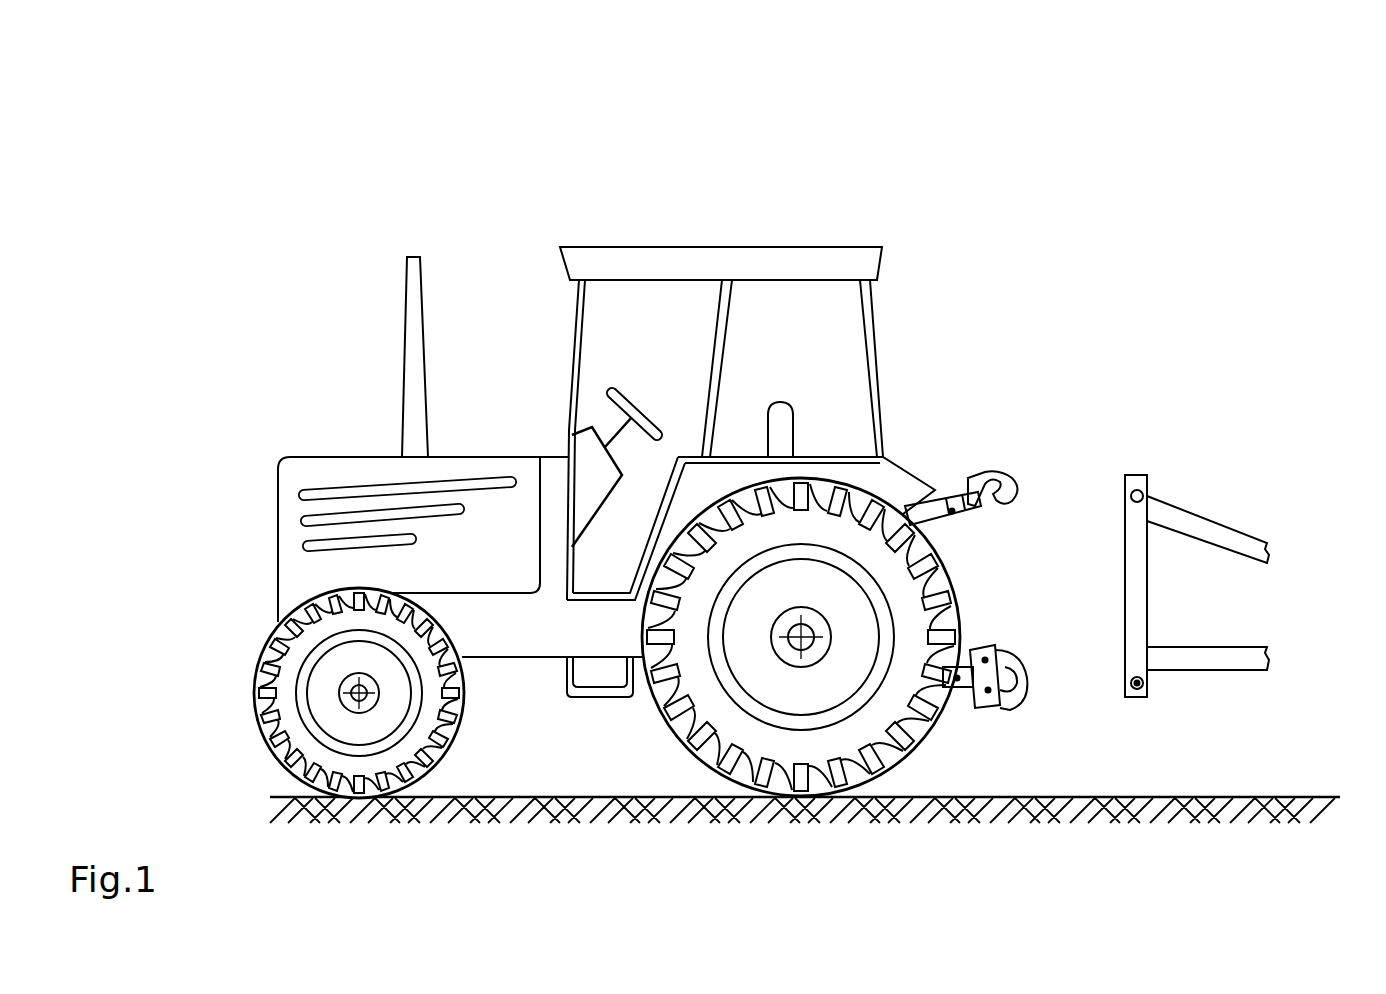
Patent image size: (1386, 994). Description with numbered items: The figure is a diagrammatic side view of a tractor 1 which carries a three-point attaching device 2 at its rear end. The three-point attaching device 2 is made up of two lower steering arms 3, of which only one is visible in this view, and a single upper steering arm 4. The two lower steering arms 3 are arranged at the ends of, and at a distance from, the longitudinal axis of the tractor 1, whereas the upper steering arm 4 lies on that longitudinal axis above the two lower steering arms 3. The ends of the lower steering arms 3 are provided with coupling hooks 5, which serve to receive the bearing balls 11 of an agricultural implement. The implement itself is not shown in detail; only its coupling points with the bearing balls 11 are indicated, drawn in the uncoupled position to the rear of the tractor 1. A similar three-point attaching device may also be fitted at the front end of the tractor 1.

The tractor 1 is at (535, 543).
The three-point attaching device 2 is at (1125, 374).
The lower steering arms 3 is at (1157, 374).
The upper steering arm 4 is at (960, 478).
The coupling hooks 5 is at (1000, 655).
The bearing balls 11 is at (1142, 676).